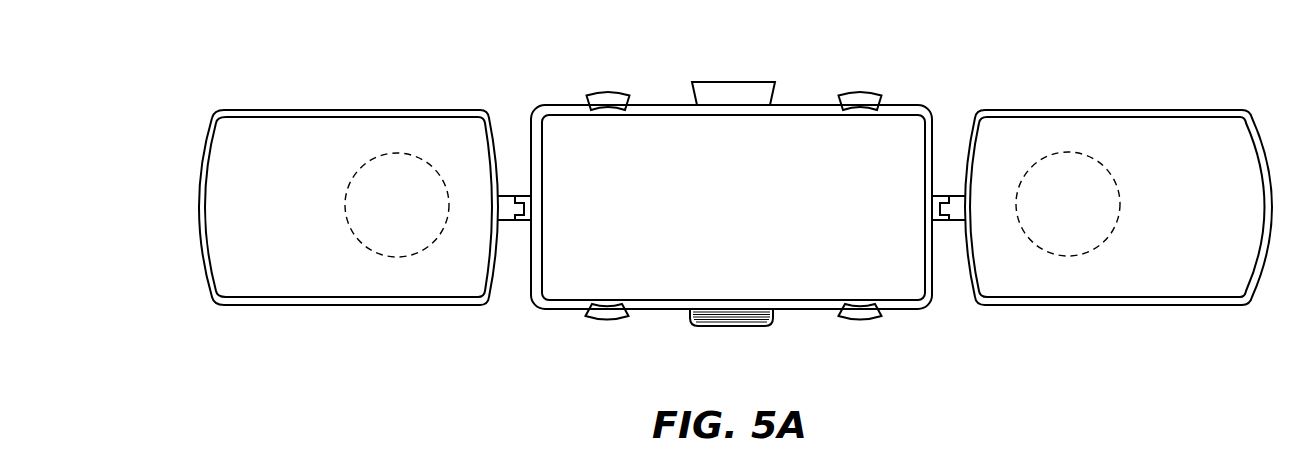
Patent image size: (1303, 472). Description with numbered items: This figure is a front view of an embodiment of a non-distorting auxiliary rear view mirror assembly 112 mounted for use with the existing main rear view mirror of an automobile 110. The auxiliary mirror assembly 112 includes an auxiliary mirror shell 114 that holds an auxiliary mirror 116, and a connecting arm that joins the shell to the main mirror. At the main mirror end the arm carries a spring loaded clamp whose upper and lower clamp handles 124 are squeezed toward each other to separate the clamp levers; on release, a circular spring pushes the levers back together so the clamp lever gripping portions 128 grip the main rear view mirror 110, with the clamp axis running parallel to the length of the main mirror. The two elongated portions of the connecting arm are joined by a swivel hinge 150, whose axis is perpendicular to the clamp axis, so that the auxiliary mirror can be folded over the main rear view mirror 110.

The main rear view mirror 110 is at (662, 322).
The auxiliary rear view mirror assembly 112 is at (317, 88).
The auxiliary mirror shell 114 is at (1156, 106).
The auxiliary mirror 116 is at (248, 262).
The upper and lower clamp handles 124 is at (867, 83).
The clamp lever gripping portions 128 is at (608, 117).
The swivel hinge 150 is at (950, 229).